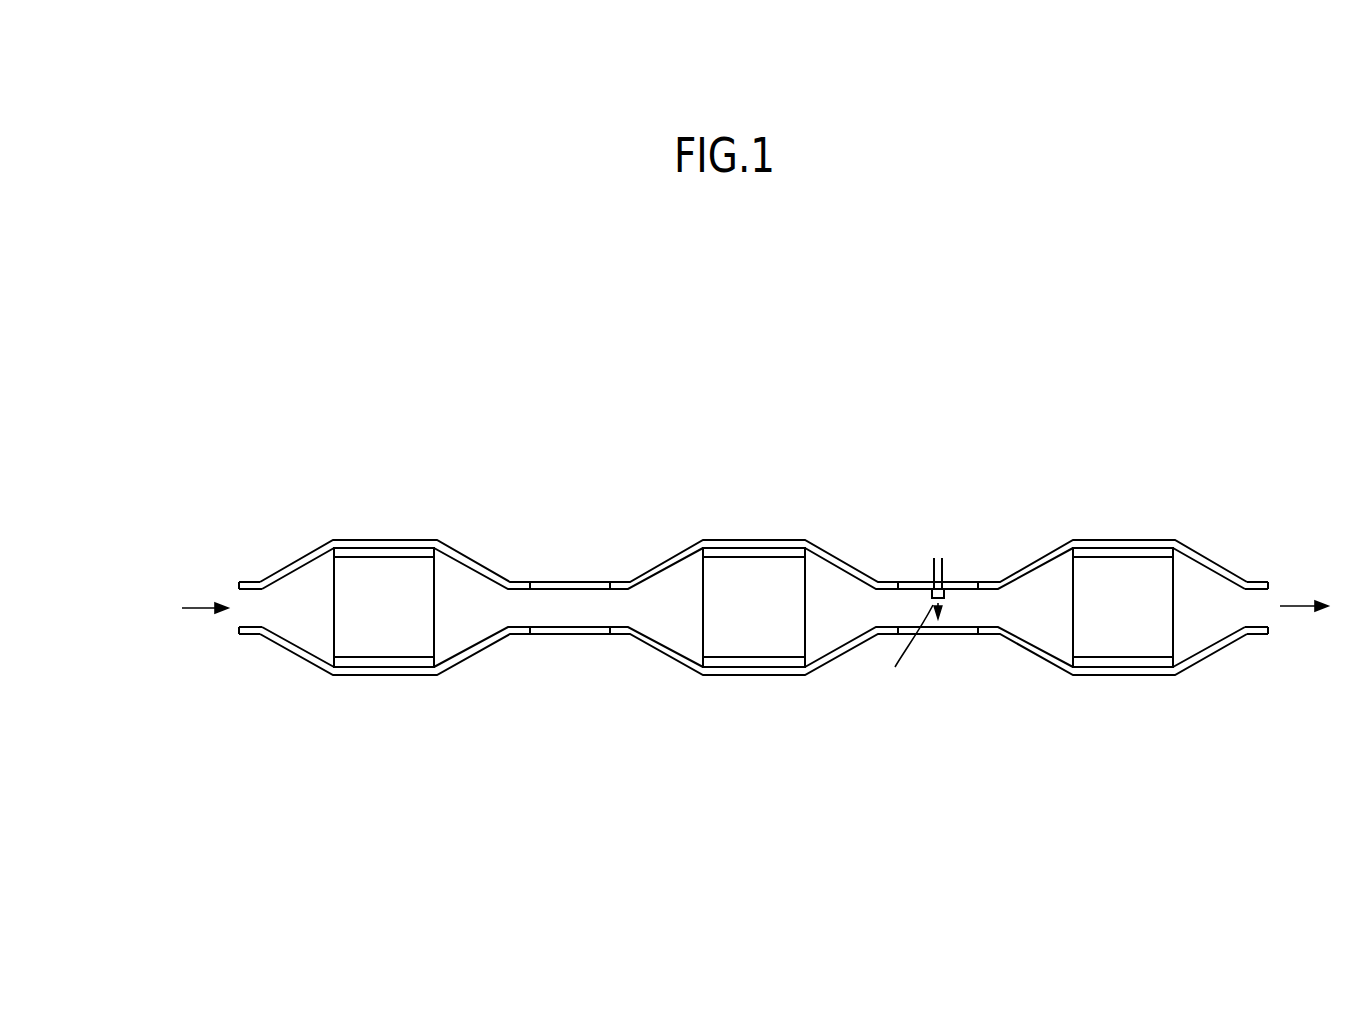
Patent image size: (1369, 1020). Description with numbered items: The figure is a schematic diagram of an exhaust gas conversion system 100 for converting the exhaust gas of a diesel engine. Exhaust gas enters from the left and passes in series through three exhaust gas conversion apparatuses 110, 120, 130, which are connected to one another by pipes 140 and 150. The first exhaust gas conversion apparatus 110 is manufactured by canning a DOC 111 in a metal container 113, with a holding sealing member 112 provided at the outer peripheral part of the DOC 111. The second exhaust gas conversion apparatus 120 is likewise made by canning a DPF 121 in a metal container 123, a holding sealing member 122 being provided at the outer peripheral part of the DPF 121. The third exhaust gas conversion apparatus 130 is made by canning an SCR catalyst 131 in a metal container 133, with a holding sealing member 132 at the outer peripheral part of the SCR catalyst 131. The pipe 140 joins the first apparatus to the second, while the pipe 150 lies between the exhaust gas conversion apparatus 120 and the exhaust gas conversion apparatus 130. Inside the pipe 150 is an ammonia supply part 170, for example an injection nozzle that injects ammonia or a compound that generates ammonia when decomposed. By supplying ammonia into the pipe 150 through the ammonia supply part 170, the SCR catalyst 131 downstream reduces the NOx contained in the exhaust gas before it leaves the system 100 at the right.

The exhaust gas conversion system 100 is at (1230, 378).
The exhaust gas conversion apparatus 110 is at (383, 511).
The DOC (Diesel Oxidation Catalyst) 111 is at (408, 640).
The holding sealing member 112 is at (358, 660).
The metal container (shell) 113 is at (288, 652).
The exhaust gas conversion apparatus 120 is at (753, 511).
The DPF (Diesel Particulate Filter) 121 is at (777, 638).
The holding sealing member 122 is at (727, 658).
The metal container 123 is at (658, 652).
The exhaust gas conversion apparatus 130 is at (1122, 511).
The SCR (Selective Catalytic Reduction) catalyst 131 is at (1146, 638).
The holding sealing member 132 is at (1095, 658).
The metal container 133 is at (1028, 652).
The pipe 140 is at (572, 634).
The pipe 150 is at (953, 634).
The ammonia supply part 170 is at (945, 570).